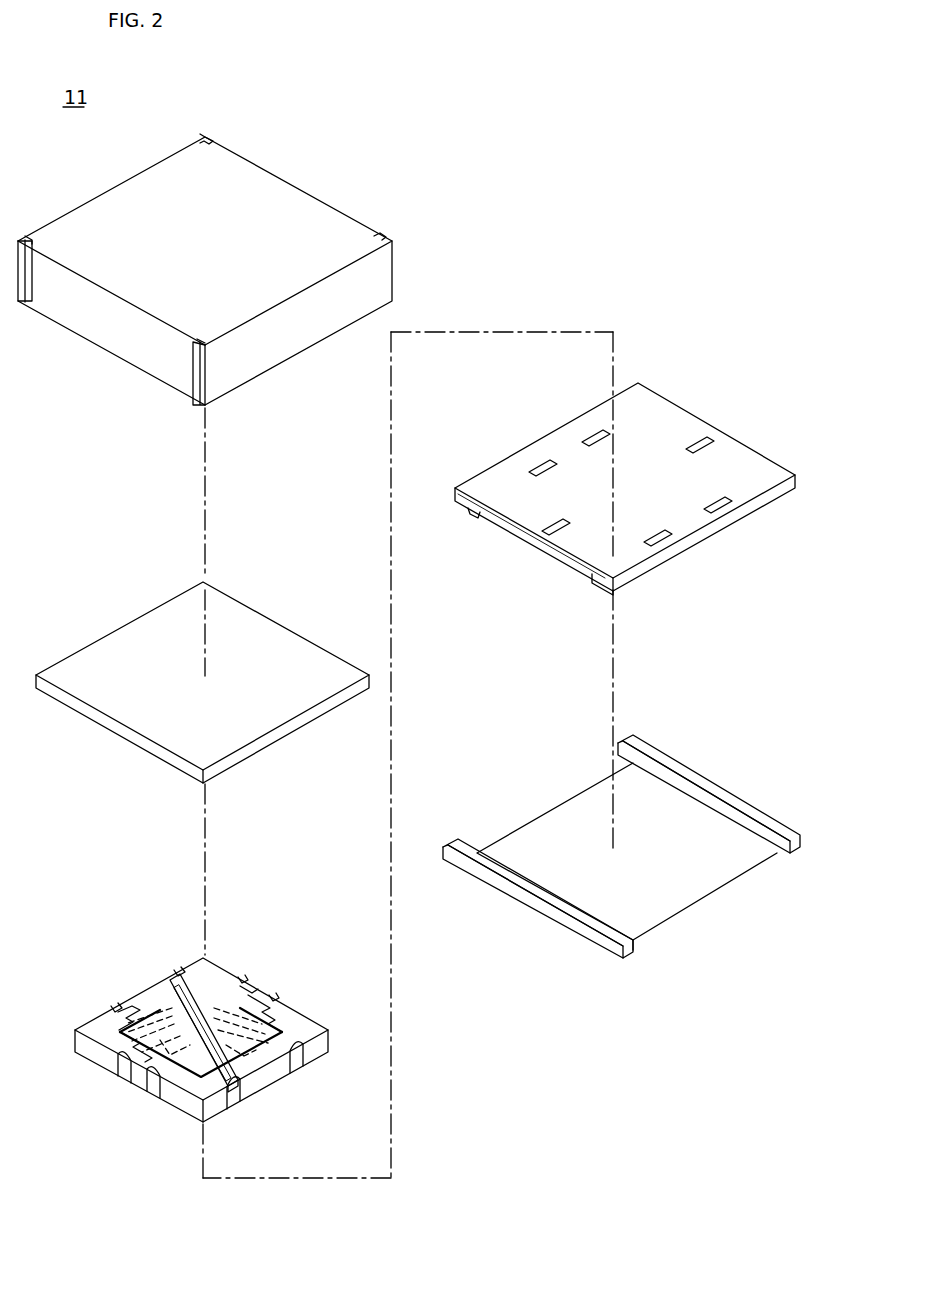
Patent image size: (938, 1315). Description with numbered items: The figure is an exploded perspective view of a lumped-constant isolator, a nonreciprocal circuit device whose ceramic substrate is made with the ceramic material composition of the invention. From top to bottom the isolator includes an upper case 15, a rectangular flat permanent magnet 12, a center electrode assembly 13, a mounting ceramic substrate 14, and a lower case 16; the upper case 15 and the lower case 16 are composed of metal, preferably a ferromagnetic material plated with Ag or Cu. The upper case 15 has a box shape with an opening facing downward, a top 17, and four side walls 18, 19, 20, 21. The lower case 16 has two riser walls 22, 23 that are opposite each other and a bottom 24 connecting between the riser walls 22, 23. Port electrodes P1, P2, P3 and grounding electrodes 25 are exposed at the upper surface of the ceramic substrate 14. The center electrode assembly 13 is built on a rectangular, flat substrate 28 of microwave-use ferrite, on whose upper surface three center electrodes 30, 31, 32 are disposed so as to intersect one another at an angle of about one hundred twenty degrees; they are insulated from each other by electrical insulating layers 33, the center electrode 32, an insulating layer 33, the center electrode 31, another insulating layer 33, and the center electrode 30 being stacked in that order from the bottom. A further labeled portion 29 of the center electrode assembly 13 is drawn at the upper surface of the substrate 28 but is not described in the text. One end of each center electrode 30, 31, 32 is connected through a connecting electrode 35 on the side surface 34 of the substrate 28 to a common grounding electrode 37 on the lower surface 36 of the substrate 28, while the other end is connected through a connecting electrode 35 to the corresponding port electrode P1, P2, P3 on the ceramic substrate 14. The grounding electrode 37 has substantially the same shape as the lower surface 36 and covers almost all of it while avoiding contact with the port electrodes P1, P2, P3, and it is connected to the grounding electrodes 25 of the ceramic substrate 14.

The permanent magnet 12 is at (272, 628).
The center electrode assembly 13 is at (204, 1016).
The mounting ceramic substrate 14 is at (748, 460).
The upper case 15 is at (348, 144).
The lower case 16 is at (621, 862).
The top 17 is at (238, 170).
The side wall 18 is at (252, 368).
The side wall 19 is at (282, 205).
The side wall 20 is at (96, 222).
The side wall 21 is at (112, 350).
The riser wall 22 is at (703, 788).
The riser wall 23 is at (500, 890).
The bottom 24 is at (552, 818).
The grounding electrode 25 is at (593, 432).
The port electrode P1 is at (657, 533).
The port electrode P2 is at (538, 463).
The port electrode P3 is at (698, 437).
The substrate 28 is at (323, 1042).
The recess 29 is at (307, 1023).
The center electrode 30 is at (198, 973).
The center electrode 31 is at (143, 1013).
The center electrode 32 is at (263, 1007).
The electrical insulating layer 33 is at (115, 1033).
The side surface 34 is at (100, 1060).
The connecting electrode 35 is at (177, 980).
The lower surface 36 is at (268, 1080).
The grounding electrode 37 is at (187, 1100).